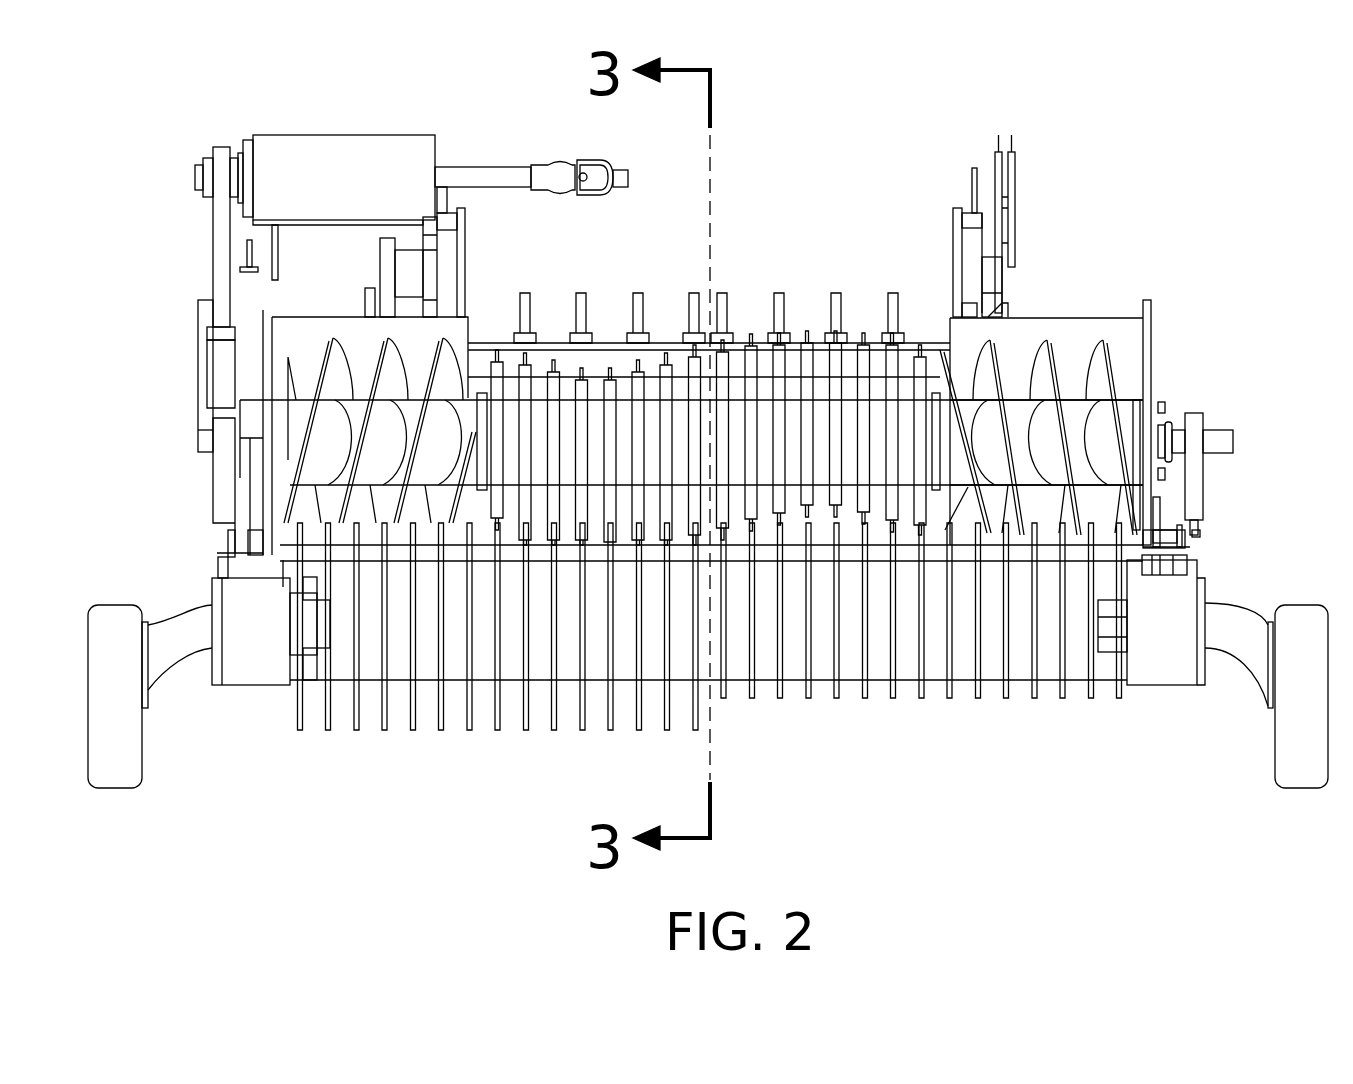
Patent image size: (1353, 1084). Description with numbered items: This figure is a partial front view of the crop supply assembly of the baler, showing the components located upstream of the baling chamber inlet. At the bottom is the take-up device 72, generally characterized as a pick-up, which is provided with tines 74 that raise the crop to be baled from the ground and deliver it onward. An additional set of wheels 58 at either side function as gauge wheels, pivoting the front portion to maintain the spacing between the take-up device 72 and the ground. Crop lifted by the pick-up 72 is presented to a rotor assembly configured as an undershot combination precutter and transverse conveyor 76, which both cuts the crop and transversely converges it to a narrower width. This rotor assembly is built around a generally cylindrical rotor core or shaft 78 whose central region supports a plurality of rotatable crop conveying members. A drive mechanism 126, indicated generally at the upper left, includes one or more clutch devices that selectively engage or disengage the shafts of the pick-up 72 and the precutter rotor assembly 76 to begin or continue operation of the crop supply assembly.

The drive mechanism 126 is at (187, 243).
The wheels 58 is at (112, 615).
The undershot combination precutter and transverse conveyor 76 is at (1114, 427).
The rotor core or shaft 78 is at (1115, 458).
The tines 74 is at (660, 726).
The take-up device 72 is at (710, 682).